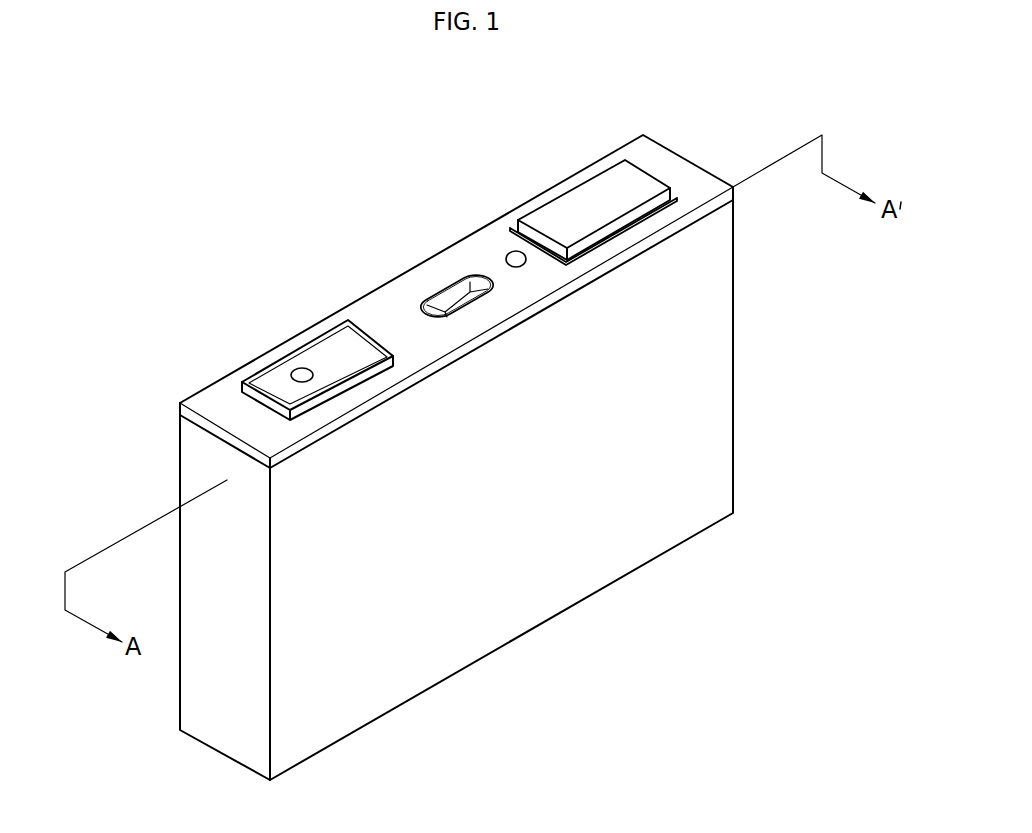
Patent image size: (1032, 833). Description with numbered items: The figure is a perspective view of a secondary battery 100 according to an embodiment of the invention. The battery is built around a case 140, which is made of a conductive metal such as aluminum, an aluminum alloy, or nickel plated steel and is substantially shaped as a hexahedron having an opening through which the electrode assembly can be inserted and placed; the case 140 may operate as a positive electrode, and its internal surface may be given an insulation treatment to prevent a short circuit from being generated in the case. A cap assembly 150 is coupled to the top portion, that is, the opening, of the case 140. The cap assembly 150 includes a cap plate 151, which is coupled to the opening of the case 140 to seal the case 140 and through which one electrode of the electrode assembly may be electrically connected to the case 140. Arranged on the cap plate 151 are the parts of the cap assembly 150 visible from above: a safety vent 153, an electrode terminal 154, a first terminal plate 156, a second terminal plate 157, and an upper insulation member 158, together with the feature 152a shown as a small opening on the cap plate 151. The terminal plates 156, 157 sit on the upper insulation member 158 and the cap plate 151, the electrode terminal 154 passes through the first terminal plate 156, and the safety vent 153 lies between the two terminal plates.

The secondary battery 100 is at (85, 83).
The case 140 is at (530, 610).
The cap assembly 150 is at (696, 130).
The cap plate 151 is at (217, 397).
The electrolyte injection hole plug 152a is at (508, 252).
The safety vent 153 is at (437, 290).
The electrode terminal 154 is at (294, 368).
The first terminal plate 156 is at (330, 345).
The second terminal plate 157 is at (583, 197).
The upper insulation member 158 is at (397, 350).